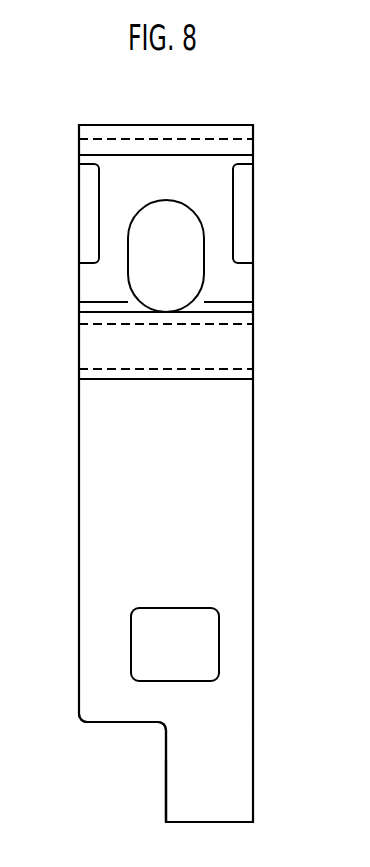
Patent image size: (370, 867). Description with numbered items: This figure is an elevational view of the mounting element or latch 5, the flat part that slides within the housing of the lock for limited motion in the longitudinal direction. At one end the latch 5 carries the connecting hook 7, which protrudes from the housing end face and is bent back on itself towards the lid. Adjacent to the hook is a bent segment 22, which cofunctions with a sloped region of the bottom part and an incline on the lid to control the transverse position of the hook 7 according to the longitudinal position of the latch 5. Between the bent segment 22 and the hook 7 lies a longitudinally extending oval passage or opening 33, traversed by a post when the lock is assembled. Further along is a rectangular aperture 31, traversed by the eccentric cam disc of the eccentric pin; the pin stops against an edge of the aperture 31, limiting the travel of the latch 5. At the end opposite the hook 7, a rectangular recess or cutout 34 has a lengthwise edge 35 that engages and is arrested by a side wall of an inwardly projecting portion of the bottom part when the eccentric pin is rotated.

The mounting element or latch 5 is at (280, 260).
The connecting hook 7 is at (213, 132).
The bent segment 22 is at (237, 350).
The rectangular aperture 31 is at (145, 650).
The oval passage or opening 33 is at (147, 272).
The rectangular recess or cutout 34 is at (130, 747).
The longitudinal or lengthwise edge 35 is at (165, 788).